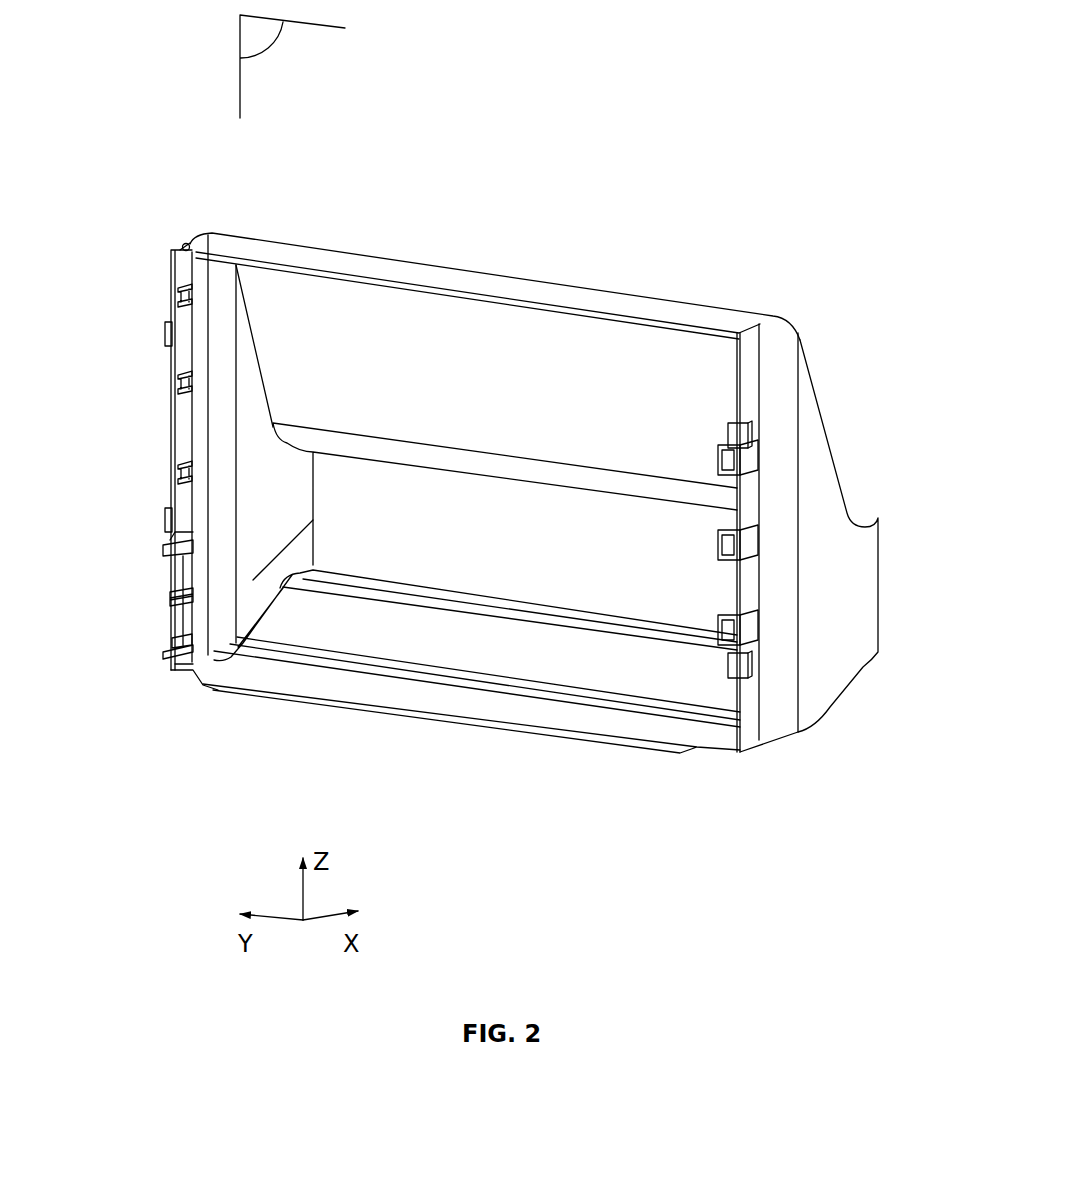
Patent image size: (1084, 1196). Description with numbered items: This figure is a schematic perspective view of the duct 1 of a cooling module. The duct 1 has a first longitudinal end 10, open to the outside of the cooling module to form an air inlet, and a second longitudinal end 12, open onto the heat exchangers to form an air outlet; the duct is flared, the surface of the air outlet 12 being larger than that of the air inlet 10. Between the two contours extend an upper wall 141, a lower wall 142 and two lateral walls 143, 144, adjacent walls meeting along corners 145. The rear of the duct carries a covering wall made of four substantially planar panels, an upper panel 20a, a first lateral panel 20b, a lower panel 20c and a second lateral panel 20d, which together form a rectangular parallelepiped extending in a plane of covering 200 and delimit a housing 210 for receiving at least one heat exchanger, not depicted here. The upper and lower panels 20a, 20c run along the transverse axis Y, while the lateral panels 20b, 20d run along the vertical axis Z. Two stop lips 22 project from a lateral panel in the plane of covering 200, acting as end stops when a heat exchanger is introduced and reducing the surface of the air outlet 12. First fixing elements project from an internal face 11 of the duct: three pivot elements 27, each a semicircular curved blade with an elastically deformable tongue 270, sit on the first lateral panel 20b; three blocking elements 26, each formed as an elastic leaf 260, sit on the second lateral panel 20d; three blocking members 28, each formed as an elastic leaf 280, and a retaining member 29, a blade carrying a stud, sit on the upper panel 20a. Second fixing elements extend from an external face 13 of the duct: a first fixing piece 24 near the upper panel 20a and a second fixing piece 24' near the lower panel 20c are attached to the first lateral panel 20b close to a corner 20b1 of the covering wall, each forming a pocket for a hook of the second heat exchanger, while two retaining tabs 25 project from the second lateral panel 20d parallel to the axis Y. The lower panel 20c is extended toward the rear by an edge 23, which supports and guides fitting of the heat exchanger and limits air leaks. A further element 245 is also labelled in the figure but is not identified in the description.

The plane of covering 200 is at (284, 47).
The duct 1 is at (726, 150).
The retaining member 29 is at (186, 244).
The corners 145 is at (250, 313).
The upper panel 20a is at (343, 266).
The blocking members 28 is at (495, 278).
The elastic leaf 280 is at (495, 278).
The second longitudinal end 12 is at (525, 344).
The external face 13 is at (707, 311).
The blocking elements 26 is at (178, 296).
The elastic leaf 260 is at (118, 380).
The retaining tabs 25 is at (165, 340).
The second lateral panel 20d is at (180, 497).
The internal face 11 is at (183, 528).
The stop lips 22 is at (199, 618).
The lateral wall 143 is at (222, 618).
The housing 210 is at (254, 581).
The edge 23 is at (471, 720).
The lower panel 20c is at (425, 722).
The elastically deformable tongue 270 is at (718, 633).
The lower mounting block 245 is at (733, 686).
The upper wall 141 is at (607, 453).
The lower wall 142 is at (403, 617).
The corner of the covering wall 20b1 is at (774, 538).
The first fixing piece 24 is at (808, 417).
The pivot elements 27 is at (744, 460).
The first lateral panel 20b is at (752, 498).
The first longitudinal end 10 is at (845, 546).
The lateral wall 144 is at (854, 625).
The second fixing piece 24' is at (816, 690).